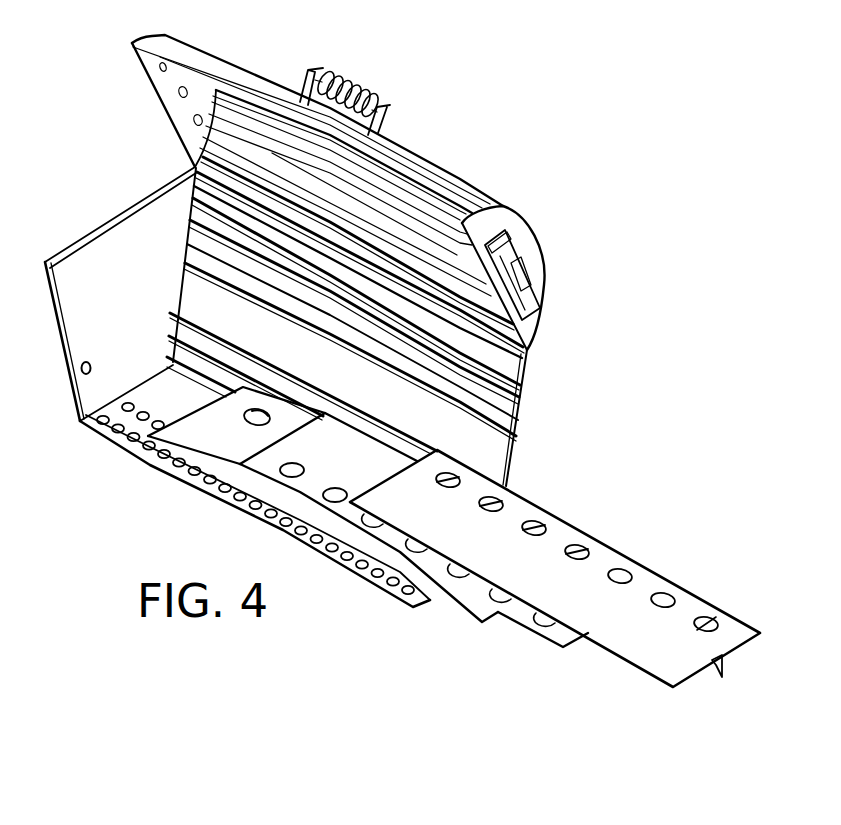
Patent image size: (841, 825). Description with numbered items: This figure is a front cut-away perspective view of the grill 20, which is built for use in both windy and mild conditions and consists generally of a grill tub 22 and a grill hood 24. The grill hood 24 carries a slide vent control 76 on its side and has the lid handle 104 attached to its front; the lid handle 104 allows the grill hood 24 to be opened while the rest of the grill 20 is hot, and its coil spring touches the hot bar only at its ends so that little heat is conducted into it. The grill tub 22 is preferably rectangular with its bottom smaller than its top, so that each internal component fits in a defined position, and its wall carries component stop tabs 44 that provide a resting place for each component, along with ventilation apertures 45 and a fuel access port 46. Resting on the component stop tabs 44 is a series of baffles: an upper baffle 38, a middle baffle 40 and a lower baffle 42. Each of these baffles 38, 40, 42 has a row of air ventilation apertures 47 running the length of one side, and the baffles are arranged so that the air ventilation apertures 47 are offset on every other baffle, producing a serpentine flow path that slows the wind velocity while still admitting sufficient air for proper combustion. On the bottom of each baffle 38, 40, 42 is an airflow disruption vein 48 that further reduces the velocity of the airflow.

The grill 20 is at (579, 172).
The grill tub 22 is at (514, 425).
The grill hood 24 is at (540, 257).
The upper baffle 38 is at (637, 653).
The middle baffle 40 is at (546, 638).
The lower baffle 42 is at (455, 606).
The component stop tabs 44 is at (522, 349).
The ventilation apertures 45 is at (135, 442).
The fuel access port 46 is at (80, 374).
The air ventilation apertures 47 is at (712, 628).
The airflow disruption vein 48 is at (716, 675).
The slide vent control 76 is at (528, 278).
The lid handle 104 is at (387, 101).